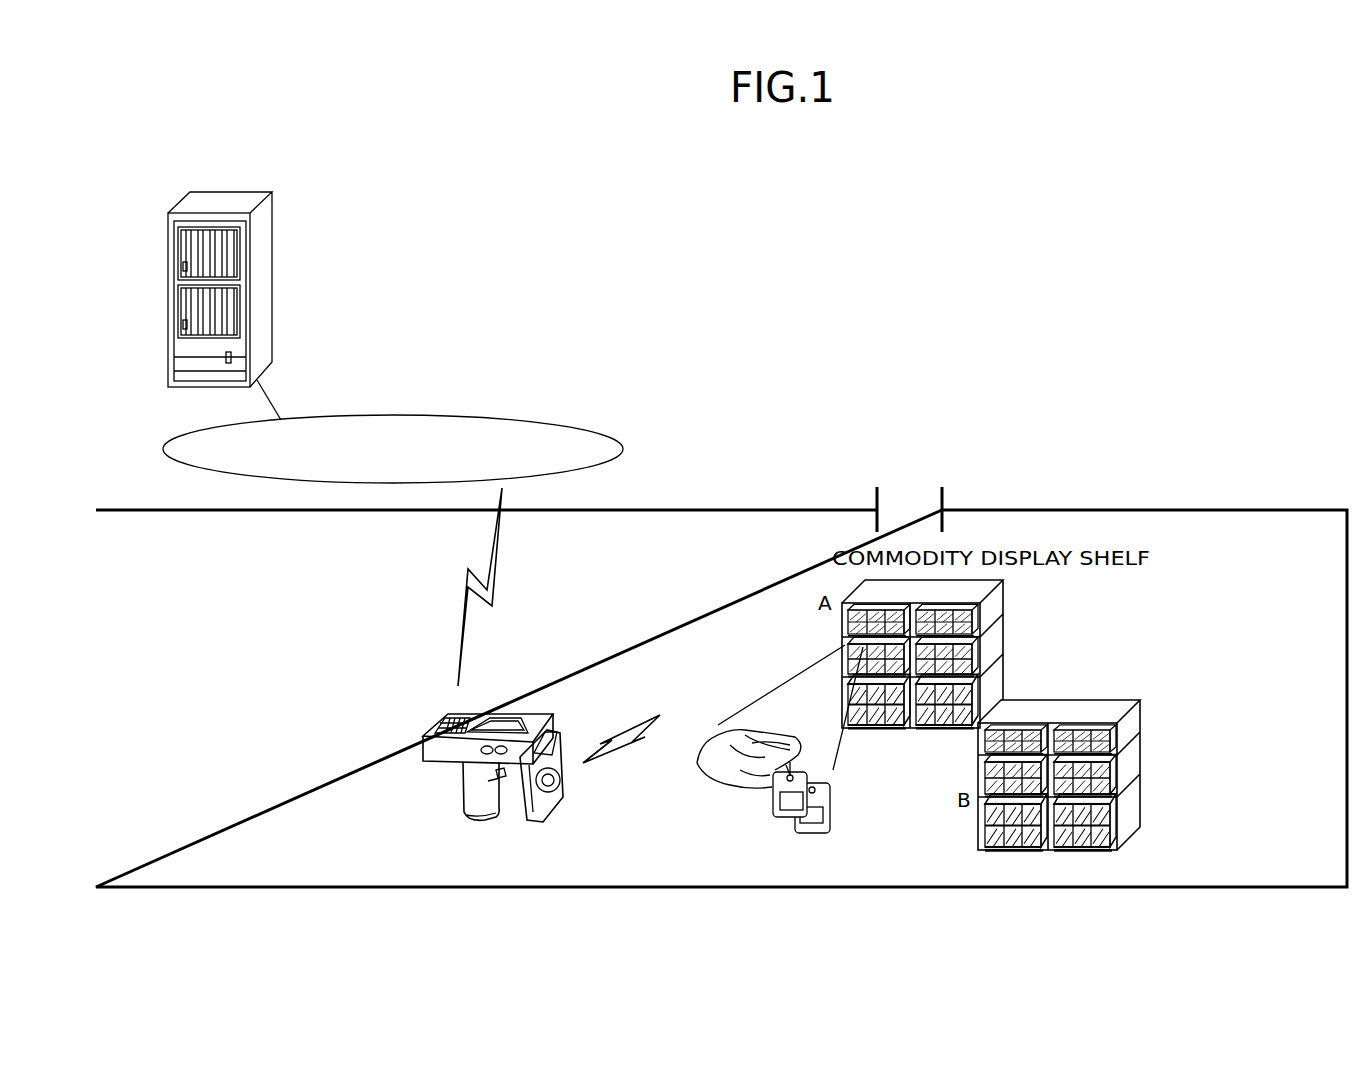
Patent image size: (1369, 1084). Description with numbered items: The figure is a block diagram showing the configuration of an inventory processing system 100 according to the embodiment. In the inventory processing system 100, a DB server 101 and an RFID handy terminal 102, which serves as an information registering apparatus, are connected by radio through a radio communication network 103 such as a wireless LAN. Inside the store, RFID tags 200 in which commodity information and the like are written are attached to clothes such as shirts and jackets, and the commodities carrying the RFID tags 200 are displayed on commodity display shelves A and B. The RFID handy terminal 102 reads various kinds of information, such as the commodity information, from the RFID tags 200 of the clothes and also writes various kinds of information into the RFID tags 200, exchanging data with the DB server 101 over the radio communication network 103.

The inventory processing system 100 is at (1004, 243).
The DB server 101 is at (330, 196).
The RFID handy terminal 102 is at (561, 808).
The radio communication network 103 is at (532, 418).
The RFID tag 200 is at (773, 805).